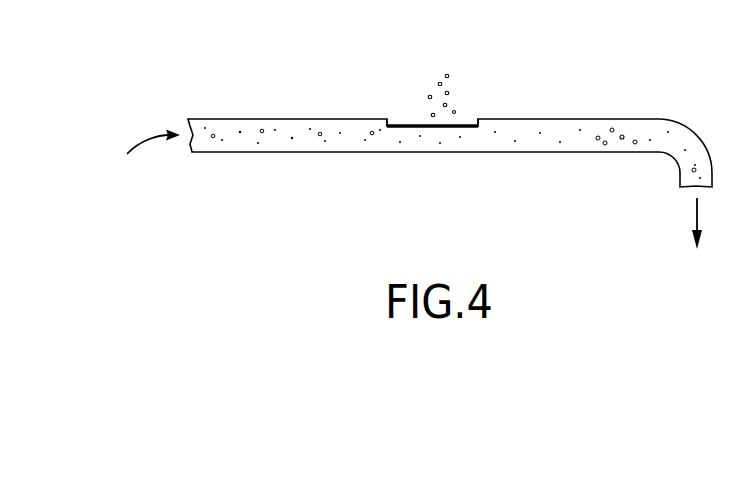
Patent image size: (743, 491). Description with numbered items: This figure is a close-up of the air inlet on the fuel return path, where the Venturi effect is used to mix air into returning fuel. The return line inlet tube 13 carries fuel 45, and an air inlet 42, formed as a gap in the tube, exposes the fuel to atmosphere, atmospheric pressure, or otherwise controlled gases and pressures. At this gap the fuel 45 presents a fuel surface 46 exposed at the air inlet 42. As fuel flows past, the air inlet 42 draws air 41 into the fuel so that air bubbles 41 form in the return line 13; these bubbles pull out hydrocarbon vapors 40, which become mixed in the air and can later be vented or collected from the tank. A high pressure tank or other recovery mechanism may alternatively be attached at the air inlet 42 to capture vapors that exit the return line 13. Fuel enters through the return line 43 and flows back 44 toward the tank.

The return line inlet tube 13 is at (505, 153).
The hydrocarbon vapors 40 is at (449, 76).
The air 41 is at (623, 135).
The air inlet 42 is at (412, 116).
The return line 43 is at (143, 157).
The back 44 is at (717, 228).
The fuel 45 is at (352, 137).
The fuel surface 46 is at (459, 124).